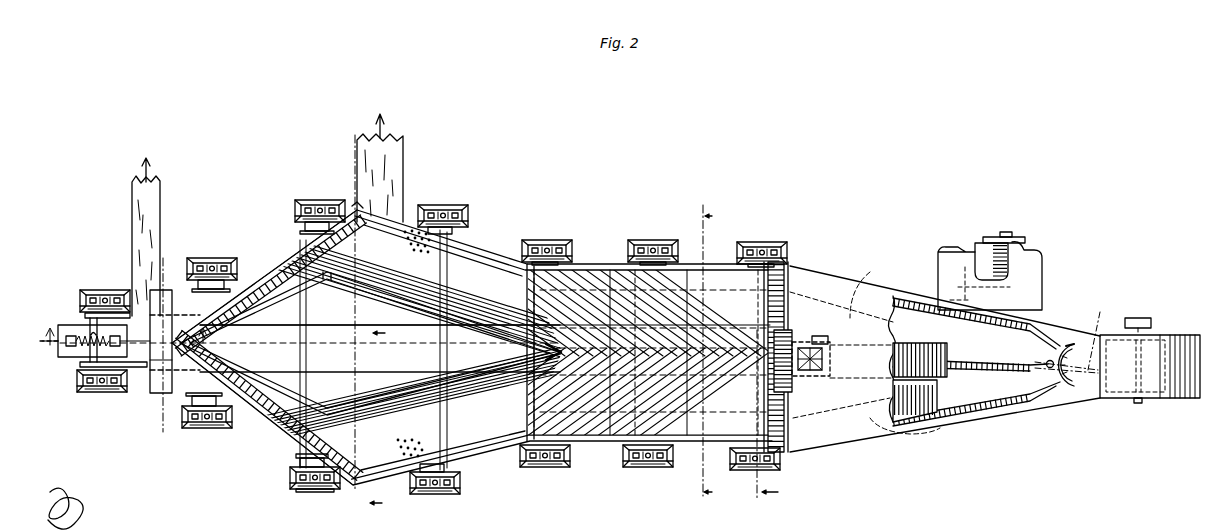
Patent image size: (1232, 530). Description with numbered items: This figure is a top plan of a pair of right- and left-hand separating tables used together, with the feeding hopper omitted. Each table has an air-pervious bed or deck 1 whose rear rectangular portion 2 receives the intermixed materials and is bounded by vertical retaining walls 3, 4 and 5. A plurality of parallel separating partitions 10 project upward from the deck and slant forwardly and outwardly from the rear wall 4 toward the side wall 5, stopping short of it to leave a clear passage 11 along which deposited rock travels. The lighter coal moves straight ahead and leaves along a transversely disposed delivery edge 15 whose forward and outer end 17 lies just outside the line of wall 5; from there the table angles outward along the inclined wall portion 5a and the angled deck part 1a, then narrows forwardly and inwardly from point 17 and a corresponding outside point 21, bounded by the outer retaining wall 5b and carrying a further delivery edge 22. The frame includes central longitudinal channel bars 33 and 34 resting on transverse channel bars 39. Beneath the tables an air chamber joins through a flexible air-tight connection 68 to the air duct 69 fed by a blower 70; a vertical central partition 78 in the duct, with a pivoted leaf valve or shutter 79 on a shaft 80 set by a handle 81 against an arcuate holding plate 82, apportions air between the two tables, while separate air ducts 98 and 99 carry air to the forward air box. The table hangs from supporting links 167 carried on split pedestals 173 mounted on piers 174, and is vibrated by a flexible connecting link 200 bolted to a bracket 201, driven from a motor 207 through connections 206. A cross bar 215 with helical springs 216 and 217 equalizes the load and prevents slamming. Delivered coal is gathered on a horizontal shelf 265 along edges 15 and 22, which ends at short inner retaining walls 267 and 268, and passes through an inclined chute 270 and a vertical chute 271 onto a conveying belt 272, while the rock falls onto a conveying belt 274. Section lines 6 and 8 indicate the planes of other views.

The bed or deck 1 is at (570, 264).
The angled part of the air pervious table or deck 1a is at (400, 228).
The rectangular portion 2 is at (605, 395).
The retaining wall 3 is at (776, 330).
The retaining wall 4 is at (813, 272).
The retaining wall 5 is at (714, 250).
The outwardly and forwardly inclined portion 5a is at (506, 258).
The outer retaining wall 5b is at (246, 263).
The section line 6 is at (772, 419).
The section line 8 is at (176, 272).
The separating partitions 10 is at (300, 290).
The clear passage 11 is at (605, 309).
The transversely disposed edge 15 is at (426, 332).
The forward and outer end of delivery edge 17 is at (305, 250).
The point on the outside 21 is at (361, 212).
The delivery edge 22 is at (262, 298).
The central longitudinally disposed channel bar 33 is at (298, 325).
The central longitudinally disposed channel bar 34 is at (296, 364).
The transversely-disposed channel bars 39 is at (358, 348).
The flexible air-tight connection 68 is at (782, 275).
The air duct 69 is at (840, 438).
The blower 70 is at (1120, 398).
The vertical central partition 78 is at (982, 368).
The leaf valve or shutter 79 is at (1102, 320).
The shaft 80 is at (1066, 346).
The handle 81 is at (1056, 368).
The arcuate positioning and holding plate 82 is at (1072, 382).
The air duct 98 is at (916, 300).
The air duct 99 is at (940, 408).
The supporting links 167 is at (298, 467).
The split pedestals 173 is at (314, 492).
The piers 174 is at (780, 252).
The flexible connecting link 200 is at (800, 372).
The plate or bracket 201 is at (792, 342).
The power-transmitting and reduction gearing or connections 206 is at (1040, 248).
The motor 207 is at (982, 246).
The cross bar 215 is at (114, 300).
The helical spring 216 is at (90, 336).
The helical spring 217 is at (90, 356).
The horizontally-disposed shelf 265 is at (420, 403).
The short inner retaining wall 267 is at (204, 356).
The short inner retaining wall 268 is at (208, 322).
The chute 270 is at (340, 285).
The vertically-disposed downwardly-discharging chute 271 is at (292, 302).
The conveying belt 272 is at (395, 158).
The conveying belt 274 is at (140, 212).